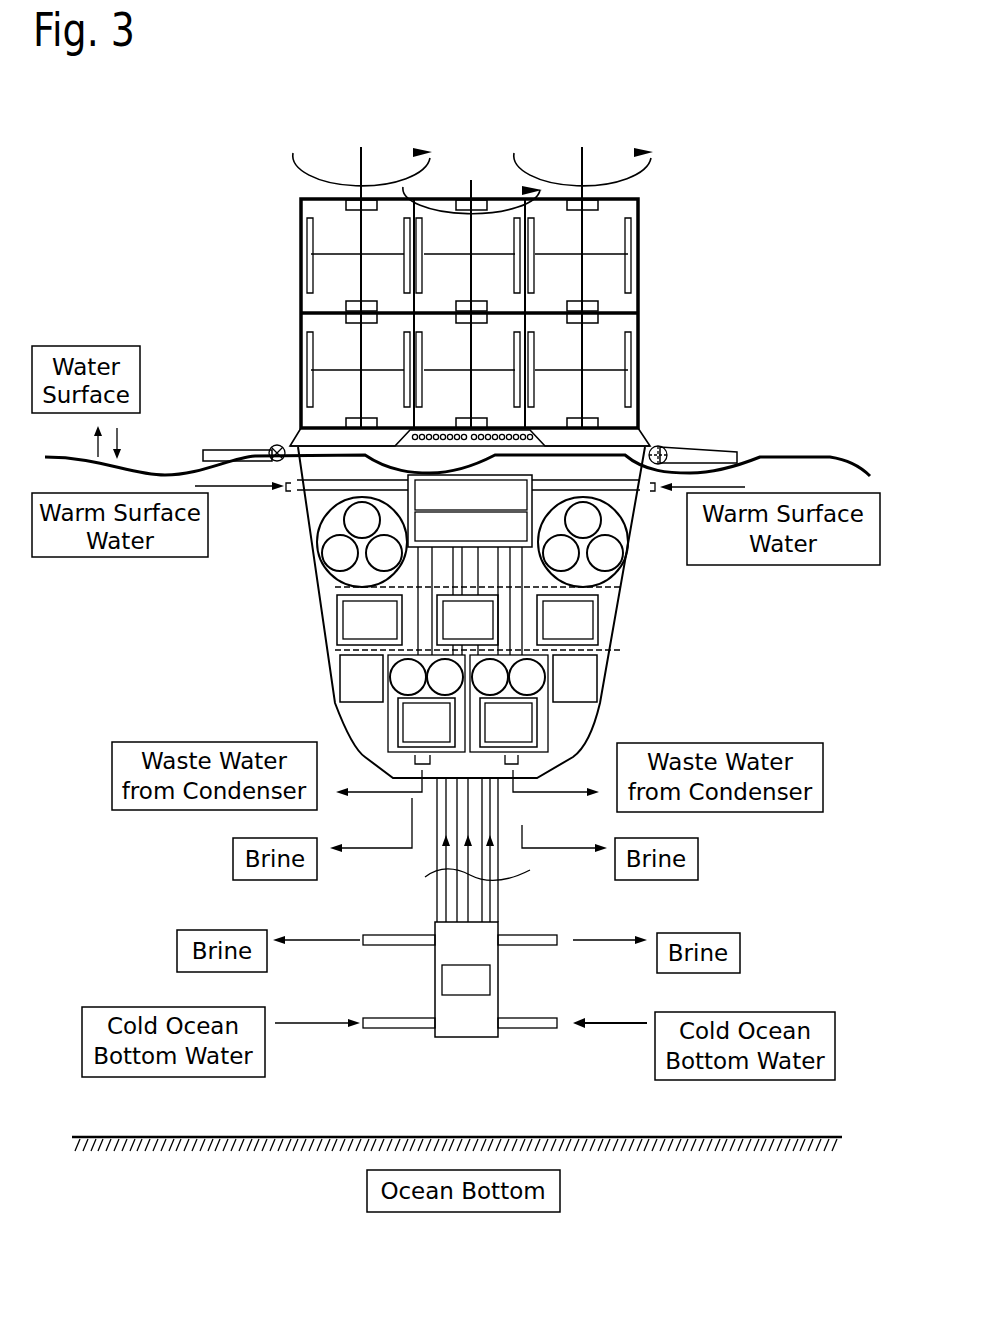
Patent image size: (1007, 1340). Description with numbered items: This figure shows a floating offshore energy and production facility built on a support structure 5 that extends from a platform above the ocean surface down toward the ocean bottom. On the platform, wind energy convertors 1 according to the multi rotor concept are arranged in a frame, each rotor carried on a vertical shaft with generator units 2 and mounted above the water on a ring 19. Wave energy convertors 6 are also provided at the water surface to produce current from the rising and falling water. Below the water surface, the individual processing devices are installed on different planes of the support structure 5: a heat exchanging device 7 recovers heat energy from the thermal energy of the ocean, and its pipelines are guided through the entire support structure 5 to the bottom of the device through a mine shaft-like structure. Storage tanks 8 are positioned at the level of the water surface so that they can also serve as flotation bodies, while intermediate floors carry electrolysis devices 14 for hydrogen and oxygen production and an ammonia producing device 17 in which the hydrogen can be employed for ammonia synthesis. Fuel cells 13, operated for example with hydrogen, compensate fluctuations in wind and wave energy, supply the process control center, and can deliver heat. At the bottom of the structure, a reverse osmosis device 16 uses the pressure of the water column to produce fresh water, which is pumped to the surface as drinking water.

The wind energy convertors 1 is at (300, 200).
The wind turbine generator units 2 is at (377, 305).
The support structure 5 is at (272, 450).
The wave energy convertors 6 is at (125, 439).
The heat exchanging device 7 is at (418, 512).
The storage tanks 8 is at (318, 562).
The fuel cells 13 is at (343, 673).
The electrolysis devices 14 is at (393, 733).
The reverse osmosis device 16 is at (462, 947).
The ammonia producing device 17 is at (598, 626).
The roller bearing ring 19 is at (535, 438).